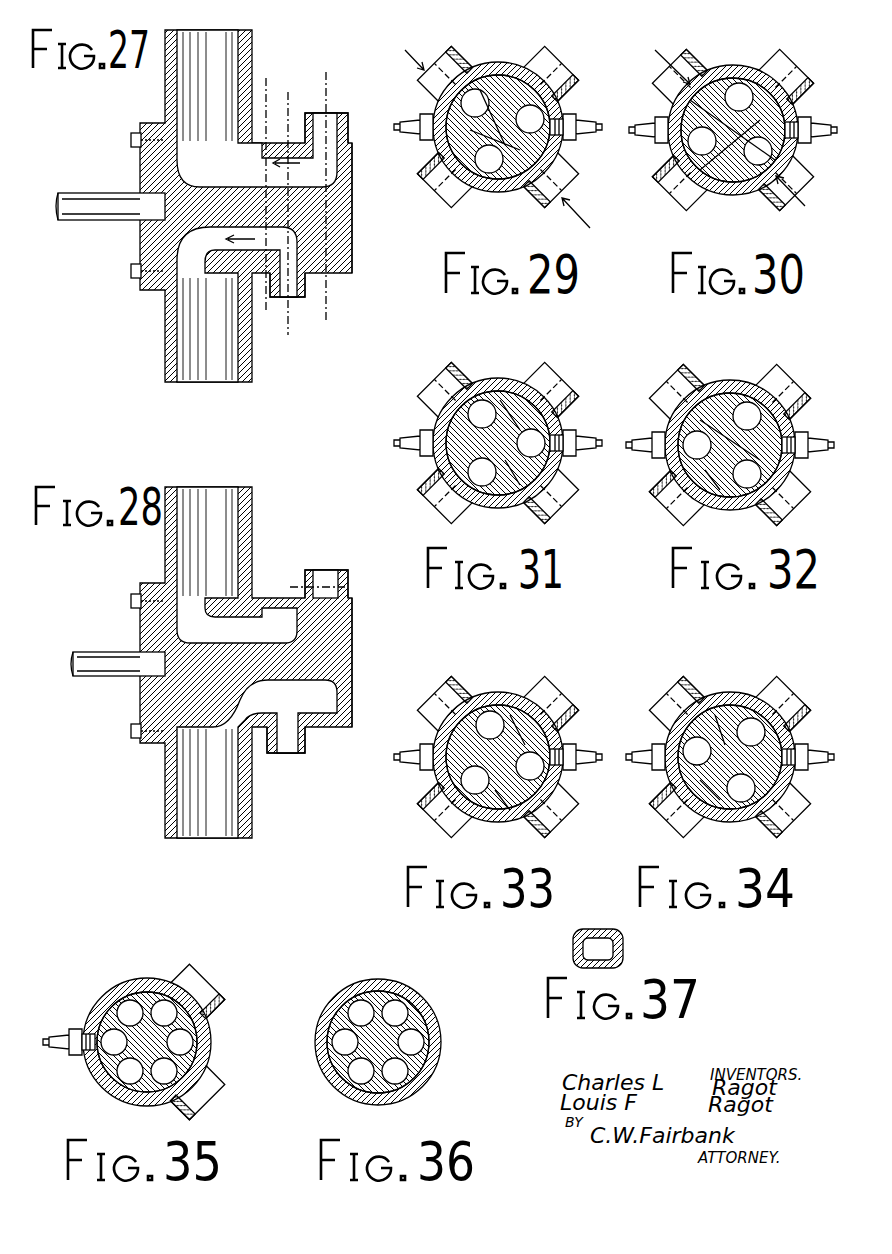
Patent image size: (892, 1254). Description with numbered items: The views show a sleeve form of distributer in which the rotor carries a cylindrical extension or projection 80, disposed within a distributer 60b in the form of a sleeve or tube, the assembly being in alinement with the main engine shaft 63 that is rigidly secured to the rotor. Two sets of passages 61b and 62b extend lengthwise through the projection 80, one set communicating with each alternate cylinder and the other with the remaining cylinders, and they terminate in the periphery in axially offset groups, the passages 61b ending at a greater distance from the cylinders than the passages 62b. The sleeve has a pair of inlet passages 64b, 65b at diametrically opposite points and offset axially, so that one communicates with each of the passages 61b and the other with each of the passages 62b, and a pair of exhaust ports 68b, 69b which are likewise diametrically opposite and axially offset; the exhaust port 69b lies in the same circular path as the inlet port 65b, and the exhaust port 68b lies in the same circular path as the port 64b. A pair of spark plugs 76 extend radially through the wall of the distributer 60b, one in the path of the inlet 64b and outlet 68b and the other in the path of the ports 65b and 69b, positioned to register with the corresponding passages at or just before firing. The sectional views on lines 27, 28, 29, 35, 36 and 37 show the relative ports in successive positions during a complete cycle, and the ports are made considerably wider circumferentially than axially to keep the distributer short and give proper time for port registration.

In FIG. 29, the section line 27 is at (504, 138).
In FIG. 30, the section line 28 is at (731, 132).
In FIG. 27, the section line 29 is at (325, 202).
In FIG. 27, the section line 35— 35 is at (287, 217).
In FIG. 27, the section line 36— 36 is at (264, 203).
In FIG. 28, the section line 37— 37 is at (320, 587).
In FIG. 27, the distributer 60b is at (352, 264).
In FIG. 28, the distributer 60b is at (350, 601).
In FIG. 29, the distributer 60b is at (543, 106).
In FIG. 30, the distributer 60b is at (733, 186).
In FIG. 31, the distributer 60b is at (450, 462).
In FIG. 32, the distributer 60b is at (715, 392).
In FIG. 33, the distributer 60b is at (480, 812).
In FIG. 34, the distributer 60b is at (716, 816).
In FIG. 35, the distributer 60b is at (200, 1050).
In FIG. 36, the distributer 60b is at (441, 1062).
In FIG. 27, the passages 61b is at (232, 165).
In FIG. 28, the passages 61b is at (242, 700).
In FIG. 29, the passages 61b is at (470, 107).
In FIG. 30, the passages 61b is at (738, 95).
In FIG. 31, the passages 61b is at (483, 412).
In FIG. 32, the passages 61b is at (747, 414).
In FIG. 33, the passages 61b is at (490, 722).
In FIG. 34, the passages 61b is at (752, 730).
In FIG. 35, the passages 61b is at (132, 1010).
In FIG. 36, the passages 61b is at (396, 1011).
In FIG. 27, the passages 62b is at (200, 245).
In FIG. 28, the passages 62b is at (215, 628).
In FIG. 29, the passages 62b is at (505, 80).
In FIG. 30, the passages 62b is at (700, 100).
In FIG. 31, the passages 62b is at (516, 402).
In FIG. 32, the passages 62b is at (700, 426).
In FIG. 33, the passages 62b is at (520, 715).
In FIG. 34, the passages 62b is at (720, 715).
In FIG. 35, the passages 62b is at (130, 1012).
In FIG. 36, the passages 62b is at (361, 1012).
In FIG. 27, the main engine shaft 63 is at (88, 204).
In FIG. 28, the main engine shaft 63 is at (100, 664).
In FIG. 27, the inlet passage 64b is at (333, 128).
In FIG. 28, the inlet passage 64b is at (327, 579).
In FIG. 29, the inlet passage 64b is at (455, 70).
In FIG. 30, the inlet passage 64b is at (695, 76).
In FIG. 31, the inlet passage 64b is at (446, 395).
In FIG. 32, the inlet passage 64b is at (690, 402).
In FIG. 33, the inlet passage 64b is at (446, 706).
In FIG. 34, the inlet passage 64b is at (680, 710).
In FIG. 37, the inlet passage 64b is at (605, 949).
In FIG. 27, the inlet passage 65b is at (296, 283).
In FIG. 28, the inlet passage 65b is at (286, 736).
In FIG. 29, the inlet passage 65b is at (548, 192).
In FIG. 30, the inlet passage 65b is at (785, 192).
In FIG. 31, the inlet passage 65b is at (556, 496).
In FIG. 32, the inlet passage 65b is at (790, 502).
In FIG. 33, the inlet passage 65b is at (556, 812).
In FIG. 34, the inlet passage 65b is at (786, 818).
In FIG. 35, the inlet passage 65b is at (192, 1095).
In FIG. 29, the exhaust port 68b is at (450, 176).
In FIG. 30, the exhaust port 68b is at (690, 195).
In FIG. 31, the exhaust port 68b is at (446, 488).
In FIG. 32, the exhaust port 68b is at (682, 498).
In FIG. 33, the exhaust port 68b is at (440, 800).
In FIG. 34, the exhaust port 68b is at (685, 812).
In FIG. 29, the exhaust port 69b is at (548, 68).
In FIG. 30, the exhaust port 69b is at (785, 78).
In FIG. 31, the exhaust port 69b is at (548, 392).
In FIG. 32, the exhaust port 69b is at (785, 397).
In FIG. 33, the exhaust port 69b is at (589, 666).
In FIG. 34, the exhaust port 69b is at (785, 702).
In FIG. 35, the exhaust port 69b is at (190, 995).
In FIG. 29, the spark plugs 76 is at (418, 128).
In FIG. 30, the spark plugs 76 is at (653, 128).
In FIG. 31, the spark plugs 76 is at (416, 446).
In FIG. 32, the spark plugs 76 is at (655, 452).
In FIG. 33, the spark plugs 76 is at (416, 758).
In FIG. 34, the spark plugs 76 is at (652, 765).
In FIG. 35, the spark plugs 76 is at (63, 1040).
In FIG. 27, the cylindrical extension or projection 80 is at (334, 223).
In FIG. 28, the cylindrical extension or projection 80 is at (324, 647).
In FIG. 29, the cylindrical extension or projection 80 is at (545, 158).
In FIG. 30, the cylindrical extension or projection 80 is at (770, 114).
In FIG. 31, the cylindrical extension or projection 80 is at (542, 476).
In FIG. 32, the cylindrical extension or projection 80 is at (710, 440).
In FIG. 33, the cylindrical extension or projection 80 is at (555, 742).
In FIG. 34, the cylindrical extension or projection 80 is at (790, 735).
In FIG. 35, the cylindrical extension or projection 80 is at (100, 1062).
In FIG. 36, the cylindrical extension or projection 80 is at (346, 1022).